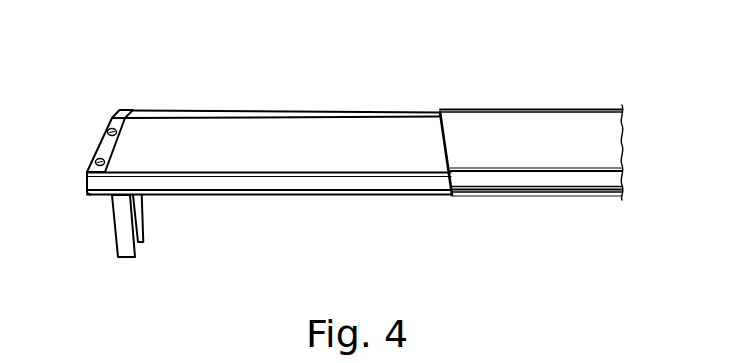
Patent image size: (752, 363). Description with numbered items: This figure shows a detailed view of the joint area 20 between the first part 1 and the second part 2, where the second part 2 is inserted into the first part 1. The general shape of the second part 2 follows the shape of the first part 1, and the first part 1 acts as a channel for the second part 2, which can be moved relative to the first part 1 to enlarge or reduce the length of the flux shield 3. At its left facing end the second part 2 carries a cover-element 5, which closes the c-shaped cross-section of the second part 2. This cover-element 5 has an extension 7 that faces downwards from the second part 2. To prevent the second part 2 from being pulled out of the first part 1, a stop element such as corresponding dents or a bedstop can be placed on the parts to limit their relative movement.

The first part 1 is at (602, 148).
The second part 2 is at (328, 162).
The flux shield 3 is at (369, 139).
The cover-element 5 is at (107, 150).
The extension 7 is at (123, 226).
The joint area 20 is at (438, 89).